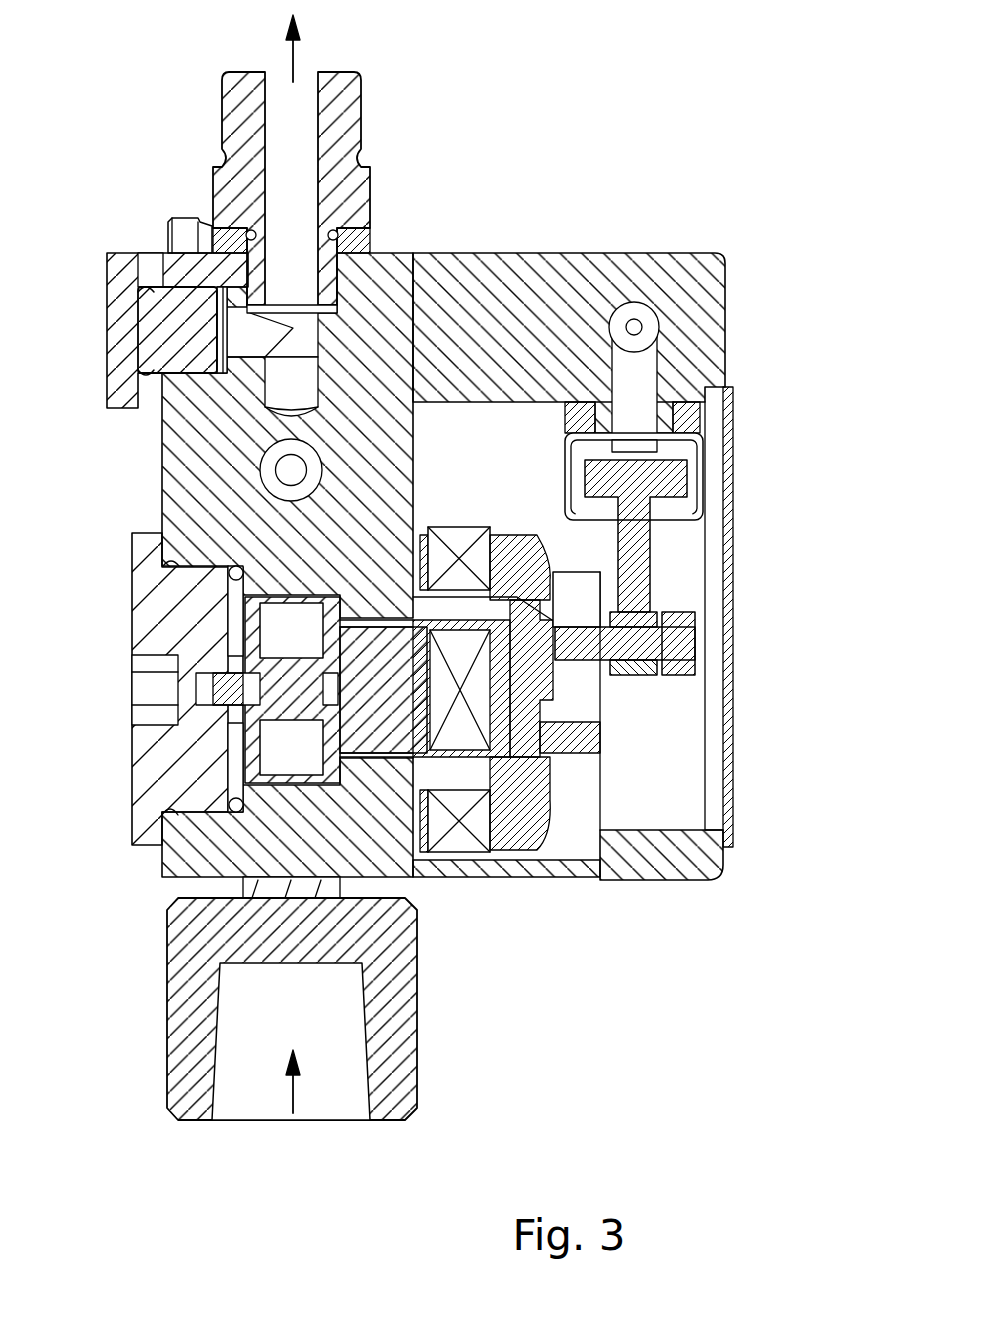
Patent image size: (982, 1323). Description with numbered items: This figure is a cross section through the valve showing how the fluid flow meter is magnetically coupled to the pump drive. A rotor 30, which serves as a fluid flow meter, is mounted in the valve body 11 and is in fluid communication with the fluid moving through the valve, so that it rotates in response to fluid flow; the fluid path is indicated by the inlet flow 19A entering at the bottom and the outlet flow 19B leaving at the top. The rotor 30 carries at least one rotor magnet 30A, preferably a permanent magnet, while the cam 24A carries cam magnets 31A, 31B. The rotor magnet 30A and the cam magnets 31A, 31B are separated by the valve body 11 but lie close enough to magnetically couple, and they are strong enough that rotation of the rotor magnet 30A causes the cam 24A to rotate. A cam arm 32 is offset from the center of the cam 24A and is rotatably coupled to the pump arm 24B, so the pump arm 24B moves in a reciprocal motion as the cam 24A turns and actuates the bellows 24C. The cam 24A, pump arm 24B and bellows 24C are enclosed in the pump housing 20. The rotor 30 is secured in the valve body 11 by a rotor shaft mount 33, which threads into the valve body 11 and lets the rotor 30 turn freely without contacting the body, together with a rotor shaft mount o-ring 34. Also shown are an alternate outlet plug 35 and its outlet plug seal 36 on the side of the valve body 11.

The valve body 11 is at (162, 425).
The inlet port fitting 19A is at (287, 1095).
The outlet port fitting 19B is at (295, 57).
The pump housing 20 is at (686, 252).
The cam 24A is at (597, 742).
The pump arm 24B is at (650, 555).
The bellows 24C is at (688, 466).
The rotor 30 is at (253, 749).
The rotor magnet 30A is at (478, 745).
The cam magnet 31A is at (467, 845).
The cam magnet 31B is at (458, 535).
The cam arm 32 is at (690, 645).
The rotor shaft mount 33 is at (132, 552).
The rotor shaft mount o-ring 34 is at (236, 567).
The alternate outlet plug 35 is at (107, 330).
The outlet plug seal 36 is at (150, 252).